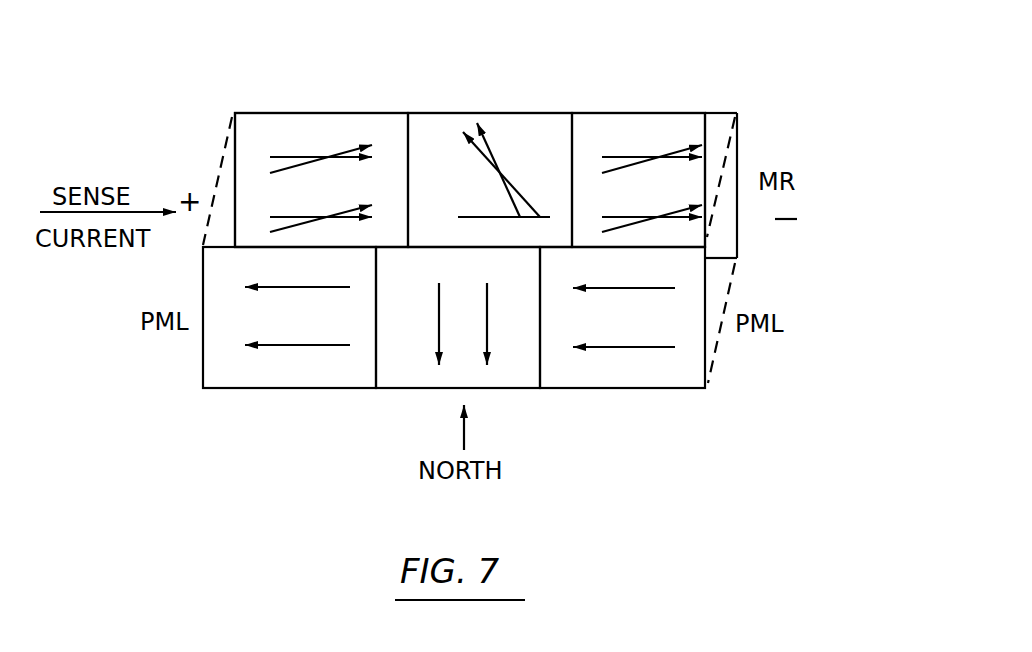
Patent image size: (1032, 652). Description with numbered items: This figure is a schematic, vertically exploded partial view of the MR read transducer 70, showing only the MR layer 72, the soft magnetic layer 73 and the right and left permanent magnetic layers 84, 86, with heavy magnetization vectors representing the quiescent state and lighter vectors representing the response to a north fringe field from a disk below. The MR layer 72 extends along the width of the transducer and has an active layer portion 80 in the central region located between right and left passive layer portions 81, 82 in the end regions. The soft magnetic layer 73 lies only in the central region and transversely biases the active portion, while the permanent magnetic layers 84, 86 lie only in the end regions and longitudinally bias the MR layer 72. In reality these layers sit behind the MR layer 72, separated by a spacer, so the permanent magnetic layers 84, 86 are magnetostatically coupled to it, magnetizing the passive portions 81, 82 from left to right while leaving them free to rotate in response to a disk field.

The MR read transducer 70 is at (818, 223).
The MR layer 72 is at (428, 110).
The soft magnetic layer 73 is at (402, 362).
The active layer portion 80 is at (532, 123).
The right passive layer portion 81 is at (643, 123).
The left passive layer portion 82 is at (325, 123).
The right permanent magnetic layer 84 is at (635, 382).
The left permanent magnetic layer 86 is at (293, 385).